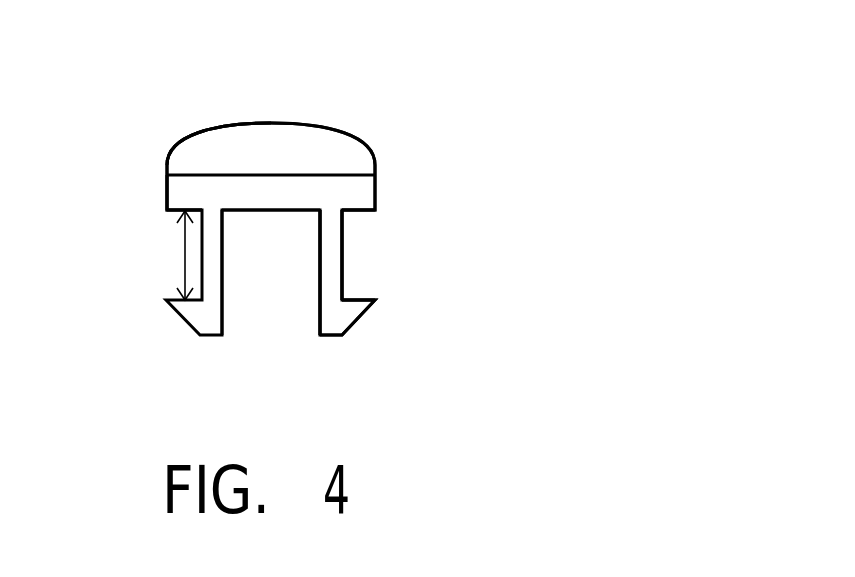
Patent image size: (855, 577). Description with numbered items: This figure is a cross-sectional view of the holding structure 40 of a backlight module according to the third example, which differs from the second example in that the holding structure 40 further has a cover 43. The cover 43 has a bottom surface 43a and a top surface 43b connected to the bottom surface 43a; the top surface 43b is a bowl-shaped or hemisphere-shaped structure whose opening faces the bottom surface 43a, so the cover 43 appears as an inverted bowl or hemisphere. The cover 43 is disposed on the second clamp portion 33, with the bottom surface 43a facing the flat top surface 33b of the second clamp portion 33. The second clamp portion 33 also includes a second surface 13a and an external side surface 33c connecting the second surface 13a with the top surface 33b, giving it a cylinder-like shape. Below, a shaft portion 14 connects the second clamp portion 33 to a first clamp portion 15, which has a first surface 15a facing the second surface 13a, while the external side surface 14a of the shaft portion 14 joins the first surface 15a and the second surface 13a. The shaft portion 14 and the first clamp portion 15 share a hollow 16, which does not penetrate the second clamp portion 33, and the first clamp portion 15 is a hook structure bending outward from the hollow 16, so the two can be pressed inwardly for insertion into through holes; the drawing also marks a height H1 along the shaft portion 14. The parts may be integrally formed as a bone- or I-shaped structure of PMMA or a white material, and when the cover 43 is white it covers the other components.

The holding structure 40 is at (533, 67).
The cover 43 is at (325, 153).
The bottom surface 43a is at (268, 175).
The top surface 43b is at (191, 130).
The second clamp portion 33 is at (365, 192).
The top surface 33b is at (180, 176).
The external side surface 33c is at (167, 192).
The second surface 13a is at (358, 210).
The shaft portion 14 is at (331, 271).
The external side surface 14a is at (342, 232).
The first clamp portion 15 is at (340, 315).
The first surface 15a is at (358, 300).
The hollow 16 is at (271, 297).
The height of leg H1 is at (169, 255).